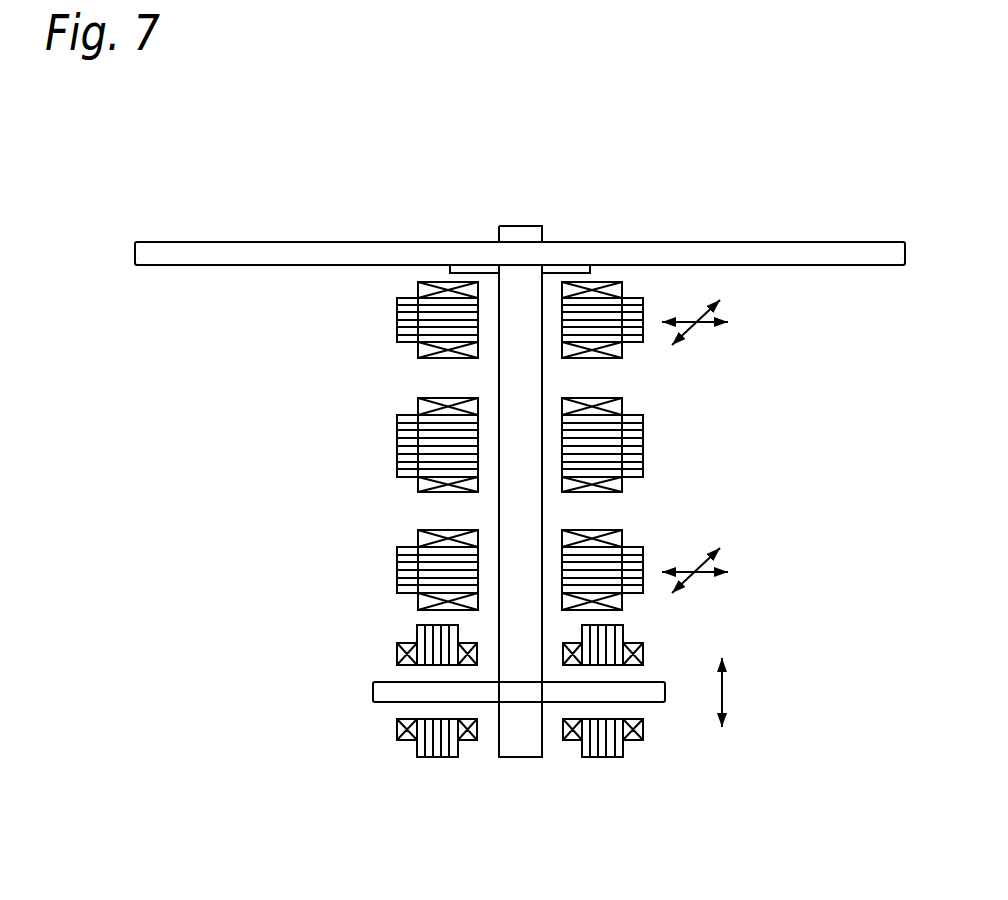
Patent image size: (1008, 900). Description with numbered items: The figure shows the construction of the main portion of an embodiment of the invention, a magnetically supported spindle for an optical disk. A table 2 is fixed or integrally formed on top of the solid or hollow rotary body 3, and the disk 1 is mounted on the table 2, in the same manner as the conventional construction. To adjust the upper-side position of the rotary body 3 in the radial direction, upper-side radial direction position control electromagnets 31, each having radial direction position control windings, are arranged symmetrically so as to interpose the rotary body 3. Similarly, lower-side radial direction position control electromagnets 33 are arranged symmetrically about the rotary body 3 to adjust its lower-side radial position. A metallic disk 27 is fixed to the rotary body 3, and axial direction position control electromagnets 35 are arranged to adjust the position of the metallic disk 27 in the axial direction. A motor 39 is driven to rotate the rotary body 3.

The disk 1 is at (374, 242).
The table 2 is at (572, 272).
The rotary body 3 is at (499, 381).
The upper-side radial direction position control electromagnets 31 is at (397, 321).
The motor 39 is at (397, 457).
The lower-side radial direction position control electromagnets 33 is at (397, 573).
The axial direction position control electromagnets 35 is at (397, 727).
The metallic disk 27 is at (655, 702).